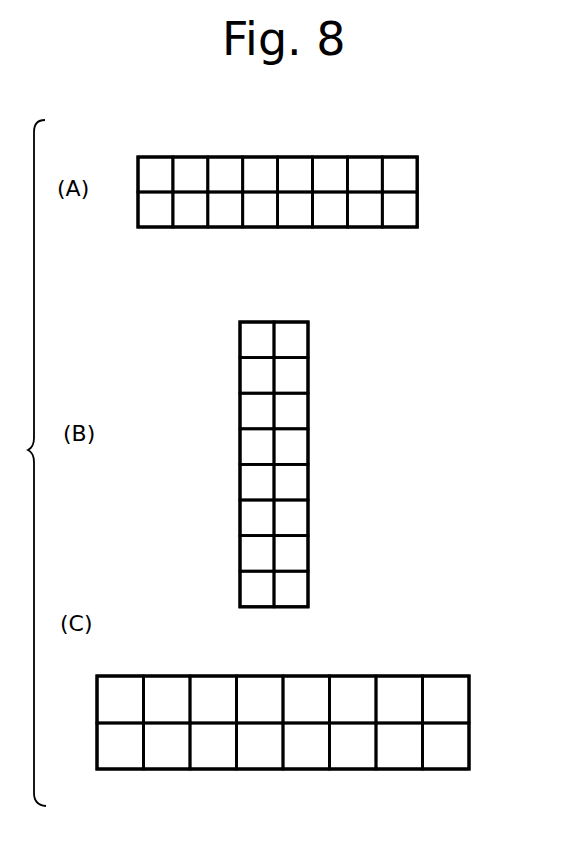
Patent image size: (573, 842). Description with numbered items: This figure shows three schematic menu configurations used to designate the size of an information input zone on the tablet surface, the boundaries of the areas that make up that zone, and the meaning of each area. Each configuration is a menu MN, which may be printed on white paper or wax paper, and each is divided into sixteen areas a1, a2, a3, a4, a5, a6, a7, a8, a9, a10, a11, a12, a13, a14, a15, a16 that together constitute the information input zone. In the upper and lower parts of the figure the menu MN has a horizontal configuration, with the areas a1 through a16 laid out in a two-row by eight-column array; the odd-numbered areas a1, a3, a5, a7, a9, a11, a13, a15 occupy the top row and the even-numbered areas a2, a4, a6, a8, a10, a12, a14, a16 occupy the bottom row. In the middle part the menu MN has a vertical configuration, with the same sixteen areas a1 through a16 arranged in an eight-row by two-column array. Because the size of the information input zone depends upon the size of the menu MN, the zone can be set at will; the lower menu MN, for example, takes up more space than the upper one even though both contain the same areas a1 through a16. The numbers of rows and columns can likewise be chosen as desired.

The area a1 is at (398, 157).
The area a2 is at (398, 228).
The area a3 is at (363, 157).
The area a4 is at (363, 228).
The area a5 is at (328, 157).
The area a6 is at (328, 228).
The area a7 is at (293, 157).
The area a8 is at (293, 228).
The area a9 is at (258, 157).
The area a10 is at (258, 228).
The area a11 is at (223, 157).
The area a12 is at (223, 228).
The area a13 is at (188, 157).
The area a14 is at (188, 228).
The area a15 is at (153, 157).
The area a16 is at (153, 228).
The menu MN is at (421, 191).